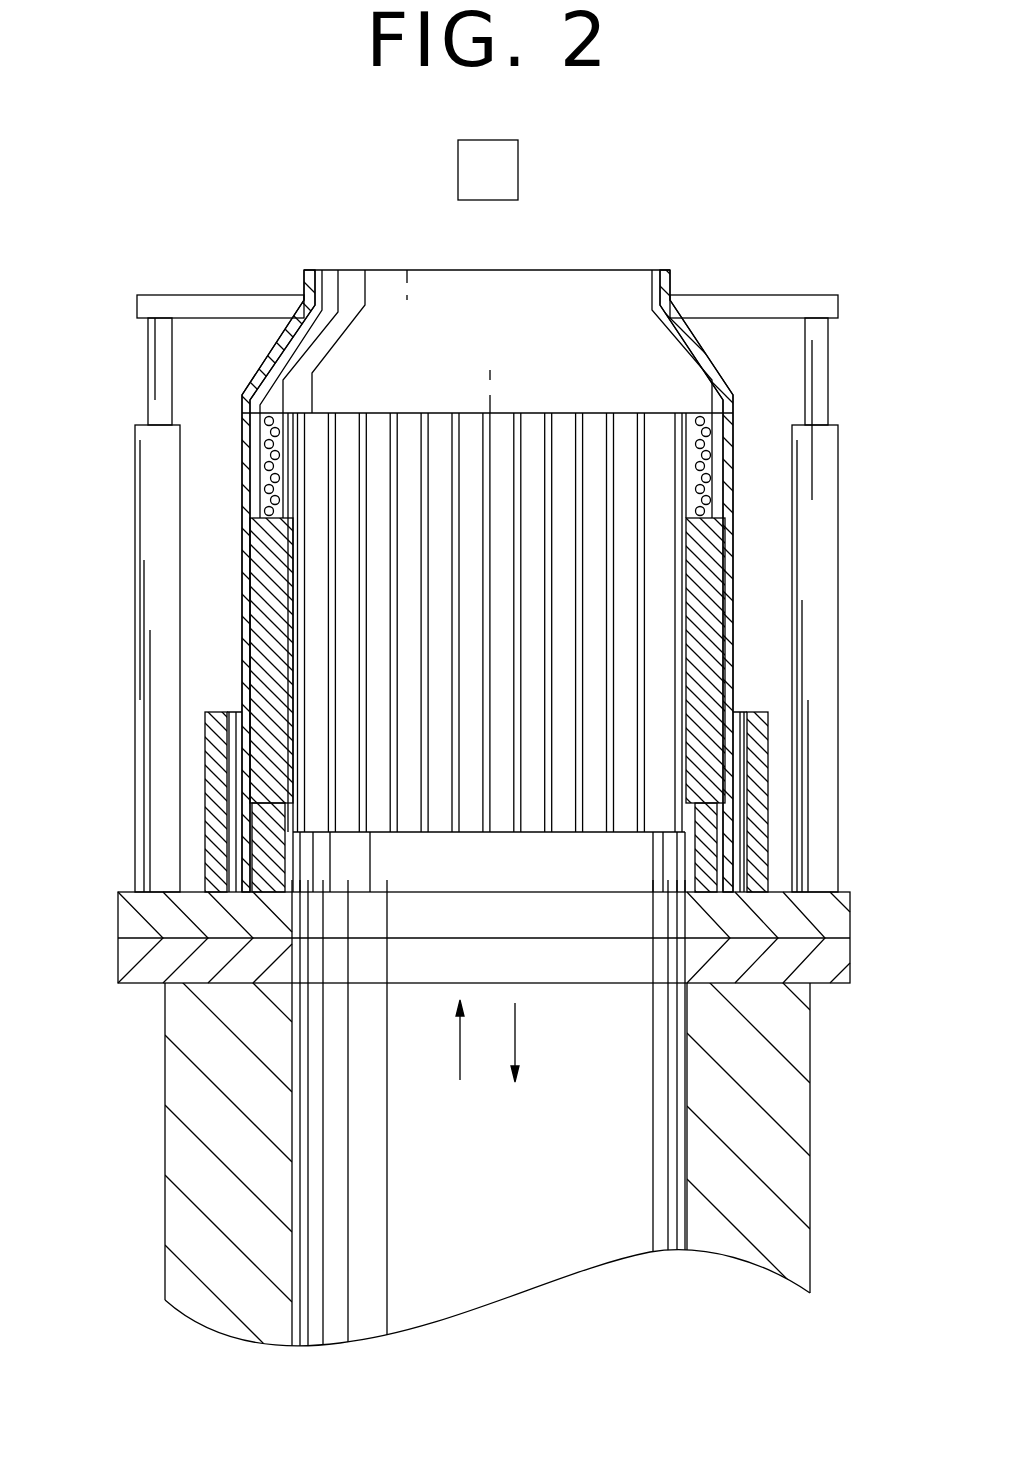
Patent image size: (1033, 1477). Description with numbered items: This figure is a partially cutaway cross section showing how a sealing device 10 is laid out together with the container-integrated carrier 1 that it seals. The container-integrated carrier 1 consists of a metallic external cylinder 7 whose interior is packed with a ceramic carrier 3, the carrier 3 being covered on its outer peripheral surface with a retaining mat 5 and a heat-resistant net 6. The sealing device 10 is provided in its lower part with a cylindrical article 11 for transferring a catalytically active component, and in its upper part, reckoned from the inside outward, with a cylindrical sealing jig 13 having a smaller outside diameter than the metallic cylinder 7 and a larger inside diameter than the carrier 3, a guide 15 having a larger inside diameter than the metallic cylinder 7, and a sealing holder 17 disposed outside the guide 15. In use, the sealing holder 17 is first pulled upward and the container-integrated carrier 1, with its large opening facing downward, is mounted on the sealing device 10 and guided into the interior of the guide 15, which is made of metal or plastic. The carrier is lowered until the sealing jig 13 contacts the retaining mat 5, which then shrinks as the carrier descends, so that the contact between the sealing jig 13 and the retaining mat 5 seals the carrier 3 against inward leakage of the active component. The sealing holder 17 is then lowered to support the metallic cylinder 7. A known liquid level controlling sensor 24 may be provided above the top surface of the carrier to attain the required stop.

The container-integrated carrier 1 is at (236, 550).
The ceramic carrier 3 is at (493, 413).
The retaining mat 5 is at (705, 590).
The heat-resistant net 6 is at (708, 478).
The metallic external cylinder 7 is at (672, 283).
The sealing device 10 is at (122, 753).
The cylindrical article 11 is at (183, 1039).
The sealing jig 13 is at (705, 855).
The guide 15 is at (752, 730).
The sealing holder 17 is at (823, 492).
The liquid level controlling sensor 24 is at (498, 172).